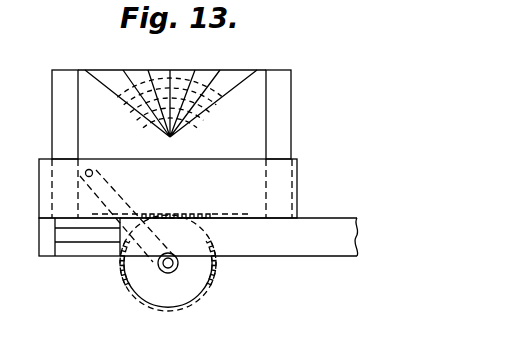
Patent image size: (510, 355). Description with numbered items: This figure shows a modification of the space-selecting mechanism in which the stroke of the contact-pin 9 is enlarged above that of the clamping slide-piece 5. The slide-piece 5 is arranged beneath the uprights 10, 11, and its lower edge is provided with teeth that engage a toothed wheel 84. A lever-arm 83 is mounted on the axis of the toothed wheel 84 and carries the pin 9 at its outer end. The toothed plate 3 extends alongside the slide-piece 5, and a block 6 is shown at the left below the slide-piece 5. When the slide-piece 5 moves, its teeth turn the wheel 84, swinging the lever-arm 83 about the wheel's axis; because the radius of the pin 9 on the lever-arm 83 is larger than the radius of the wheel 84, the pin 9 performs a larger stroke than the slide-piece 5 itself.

The plate 3 is at (239, 235).
The slide-piece 5 is at (168, 188).
The guide block 6 is at (79, 237).
The contact-pin 9 is at (93, 173).
The upright 10 is at (65, 114).
The upright 11 is at (278, 114).
The lever-arm 83 is at (121, 202).
The toothed wheel 84 is at (168, 263).